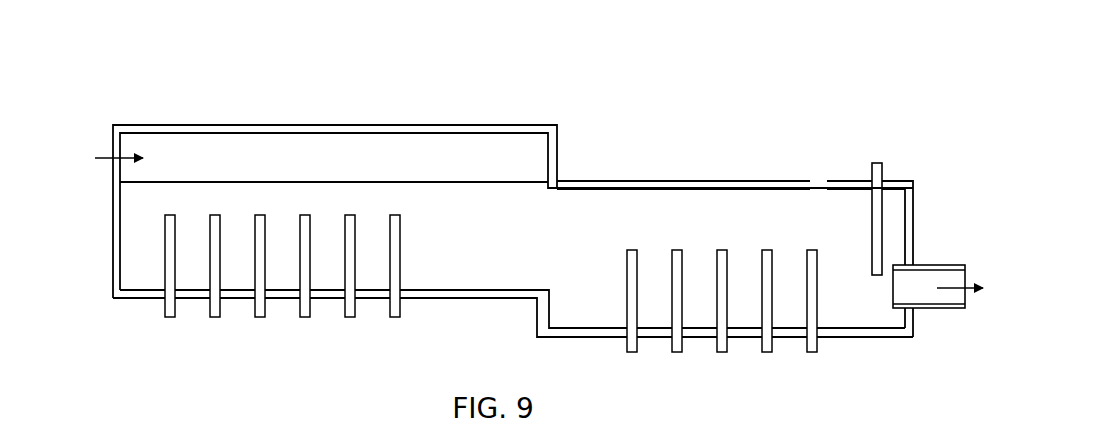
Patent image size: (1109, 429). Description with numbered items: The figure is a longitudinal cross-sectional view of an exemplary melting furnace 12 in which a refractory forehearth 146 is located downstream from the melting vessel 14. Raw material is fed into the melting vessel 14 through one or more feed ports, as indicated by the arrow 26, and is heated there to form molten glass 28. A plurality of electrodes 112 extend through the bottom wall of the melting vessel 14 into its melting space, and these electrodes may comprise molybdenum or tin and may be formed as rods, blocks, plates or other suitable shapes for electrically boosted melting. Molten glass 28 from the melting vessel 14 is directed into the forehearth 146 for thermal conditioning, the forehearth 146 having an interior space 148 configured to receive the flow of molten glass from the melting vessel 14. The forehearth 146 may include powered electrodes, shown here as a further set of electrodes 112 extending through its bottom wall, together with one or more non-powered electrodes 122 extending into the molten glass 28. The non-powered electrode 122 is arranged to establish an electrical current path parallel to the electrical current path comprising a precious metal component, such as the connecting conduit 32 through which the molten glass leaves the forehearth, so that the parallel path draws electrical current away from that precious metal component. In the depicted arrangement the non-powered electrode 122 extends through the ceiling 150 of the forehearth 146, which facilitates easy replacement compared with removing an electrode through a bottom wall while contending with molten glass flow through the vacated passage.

The melting furnace 12 is at (585, 90).
The melting vessel 14 is at (417, 126).
The arrow 26 is at (105, 158).
The molten glass 28 is at (488, 255).
The first connecting conduit 32 is at (947, 310).
The plurality of electrodes 112 is at (153, 332).
The non-powered electrode 122 is at (885, 168).
The forehearth 146 is at (713, 173).
The interior space 148 is at (817, 216).
The ceiling 150 is at (645, 178).